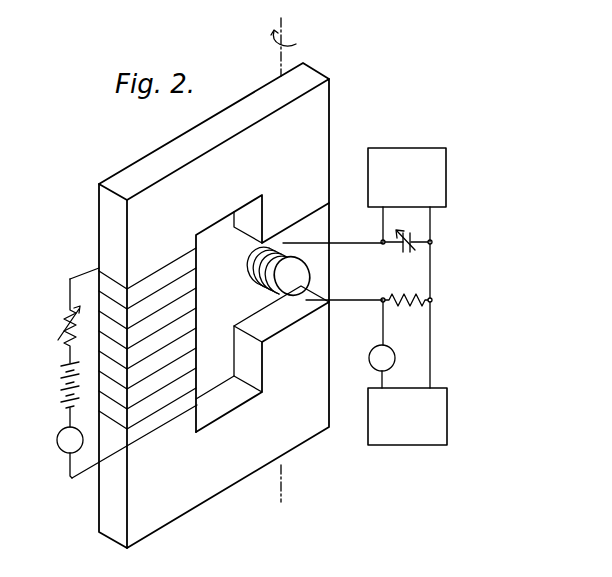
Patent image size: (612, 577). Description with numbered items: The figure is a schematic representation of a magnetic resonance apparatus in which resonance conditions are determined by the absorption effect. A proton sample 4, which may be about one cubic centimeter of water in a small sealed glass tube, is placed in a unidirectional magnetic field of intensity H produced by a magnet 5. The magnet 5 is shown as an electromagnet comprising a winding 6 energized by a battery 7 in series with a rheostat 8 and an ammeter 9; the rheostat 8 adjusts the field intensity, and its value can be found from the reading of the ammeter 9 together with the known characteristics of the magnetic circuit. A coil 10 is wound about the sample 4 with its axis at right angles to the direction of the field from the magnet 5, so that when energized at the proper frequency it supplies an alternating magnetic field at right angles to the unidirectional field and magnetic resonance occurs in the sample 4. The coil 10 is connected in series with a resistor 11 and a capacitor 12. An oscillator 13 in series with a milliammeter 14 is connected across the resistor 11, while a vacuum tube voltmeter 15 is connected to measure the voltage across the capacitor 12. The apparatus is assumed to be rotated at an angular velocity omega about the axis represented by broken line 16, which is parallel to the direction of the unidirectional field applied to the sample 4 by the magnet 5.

The proton sample 4 is at (311, 275).
The magnet 5 is at (331, 104).
The winding 6 is at (198, 300).
The battery 7 is at (62, 383).
The rheostat 8 is at (63, 319).
The ammeter 9 is at (57, 440).
The coil 10 is at (268, 262).
The resistor 11 is at (407, 306).
The capacitor 12 is at (405, 253).
The oscillator 13 is at (447, 401).
The milliammeter 14 is at (374, 349).
The vacuum tube voltmeter 15 is at (446, 176).
The axis of rotation 16 is at (284, 23).